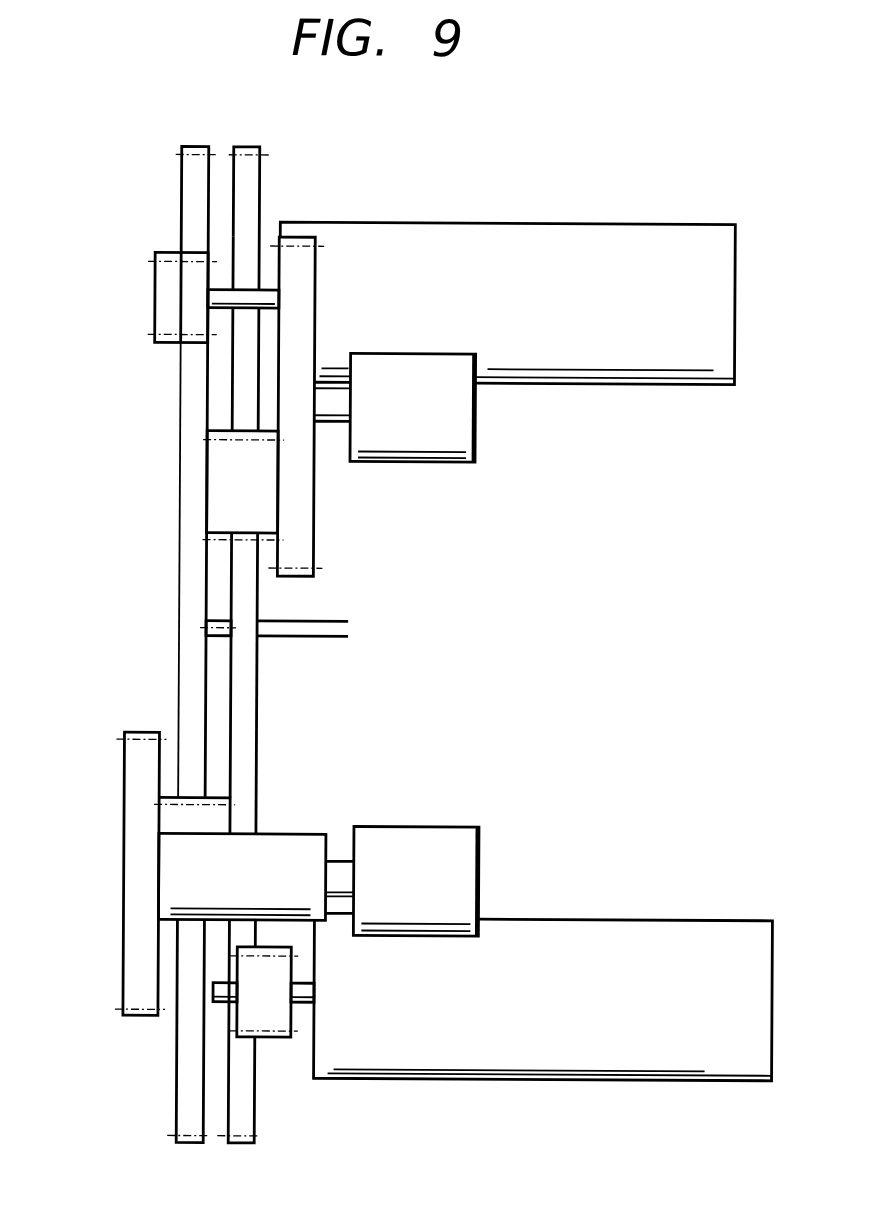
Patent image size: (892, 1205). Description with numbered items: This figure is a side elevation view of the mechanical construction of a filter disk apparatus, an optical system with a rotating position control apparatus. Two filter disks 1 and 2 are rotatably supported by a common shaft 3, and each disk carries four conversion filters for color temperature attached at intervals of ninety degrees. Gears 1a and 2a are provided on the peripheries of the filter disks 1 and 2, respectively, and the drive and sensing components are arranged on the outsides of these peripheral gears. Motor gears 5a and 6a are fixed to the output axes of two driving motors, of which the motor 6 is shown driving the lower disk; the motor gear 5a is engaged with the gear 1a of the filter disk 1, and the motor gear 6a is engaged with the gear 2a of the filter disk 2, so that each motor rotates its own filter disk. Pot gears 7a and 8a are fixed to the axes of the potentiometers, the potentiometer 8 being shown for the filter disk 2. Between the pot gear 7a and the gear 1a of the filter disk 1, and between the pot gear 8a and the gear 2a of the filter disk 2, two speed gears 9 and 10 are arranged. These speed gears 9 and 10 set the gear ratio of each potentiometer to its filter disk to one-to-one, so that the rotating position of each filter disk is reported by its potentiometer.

The filter disk 1 is at (190, 676).
The gear 1a is at (194, 163).
The filter disk 2 is at (250, 607).
The gear 2a is at (248, 163).
The shaft 3 is at (340, 632).
The motor gear 5a is at (167, 268).
The motor 6 is at (603, 932).
The motor gear 6a is at (272, 1020).
The pot gear 7a is at (305, 260).
The potentiometer 8 is at (412, 838).
The pot gear 8a is at (143, 748).
The speed gear 9 is at (190, 412).
The speed gear 10 is at (253, 735).